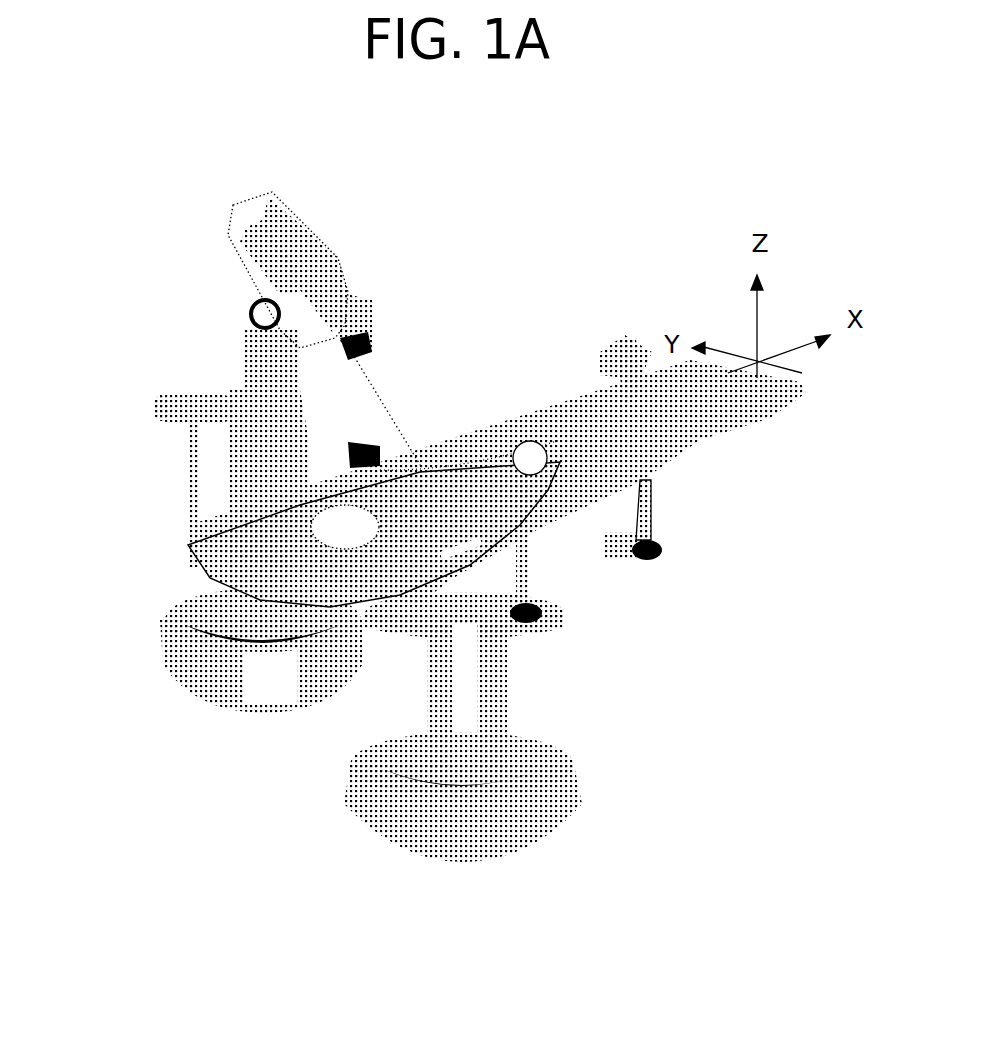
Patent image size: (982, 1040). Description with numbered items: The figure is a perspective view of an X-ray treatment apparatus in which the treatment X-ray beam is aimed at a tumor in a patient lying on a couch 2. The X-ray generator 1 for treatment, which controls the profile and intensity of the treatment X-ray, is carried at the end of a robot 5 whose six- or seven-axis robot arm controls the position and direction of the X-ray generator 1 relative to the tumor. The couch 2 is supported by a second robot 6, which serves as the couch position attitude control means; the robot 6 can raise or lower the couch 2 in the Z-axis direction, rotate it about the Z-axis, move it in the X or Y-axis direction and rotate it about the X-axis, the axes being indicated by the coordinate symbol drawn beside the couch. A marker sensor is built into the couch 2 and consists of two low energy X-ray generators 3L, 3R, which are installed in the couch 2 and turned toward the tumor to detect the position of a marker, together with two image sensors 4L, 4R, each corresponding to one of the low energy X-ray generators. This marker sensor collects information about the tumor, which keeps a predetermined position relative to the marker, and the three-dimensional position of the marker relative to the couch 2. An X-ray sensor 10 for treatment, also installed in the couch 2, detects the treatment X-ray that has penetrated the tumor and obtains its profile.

The X-ray generator for treatment 1 is at (353, 295).
The robot 5 is at (252, 378).
The low energy X-ray generator 3L is at (172, 402).
The low energy X-ray generator 3R is at (535, 447).
The image sensor 4R is at (370, 447).
The image sensor 4L is at (643, 533).
The couch 2 is at (702, 437).
The X-ray sensor for treatment 10 is at (545, 523).
The robot 6 is at (485, 695).